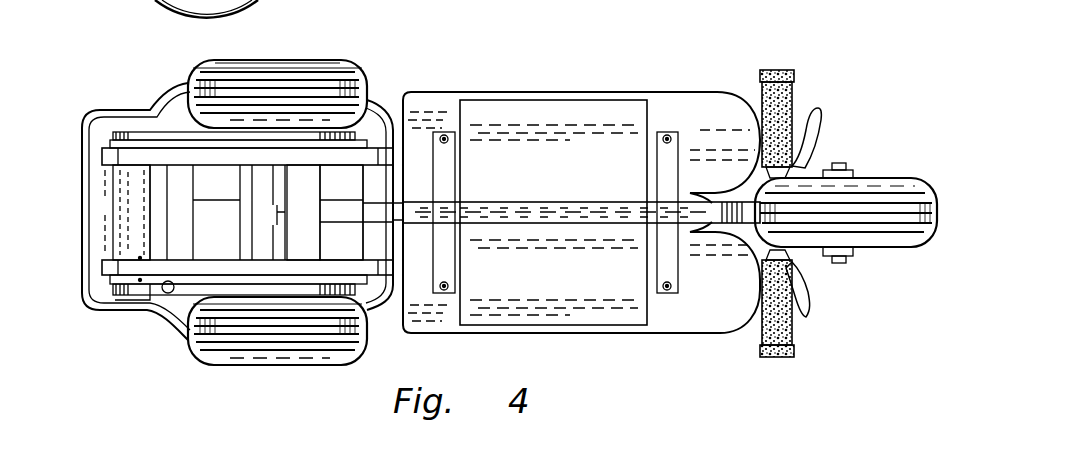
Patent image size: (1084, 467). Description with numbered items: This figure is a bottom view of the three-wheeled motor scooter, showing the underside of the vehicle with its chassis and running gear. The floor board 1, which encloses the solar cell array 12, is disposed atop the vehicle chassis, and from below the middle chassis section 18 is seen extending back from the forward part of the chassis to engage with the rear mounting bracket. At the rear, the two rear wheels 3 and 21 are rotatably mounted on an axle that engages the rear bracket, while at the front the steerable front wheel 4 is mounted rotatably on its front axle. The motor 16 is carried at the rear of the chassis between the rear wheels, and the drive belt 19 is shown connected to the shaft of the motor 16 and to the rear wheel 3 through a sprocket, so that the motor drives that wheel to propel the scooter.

The floor board 1 is at (704, 113).
The rear wheel 3 is at (343, 66).
The front wheel 4 is at (878, 204).
The solar cell array 12 is at (583, 270).
The motor 16 is at (140, 212).
The middle chassis section 18 is at (570, 208).
The drive belt 19 is at (185, 135).
The rear wheel 21 is at (275, 352).